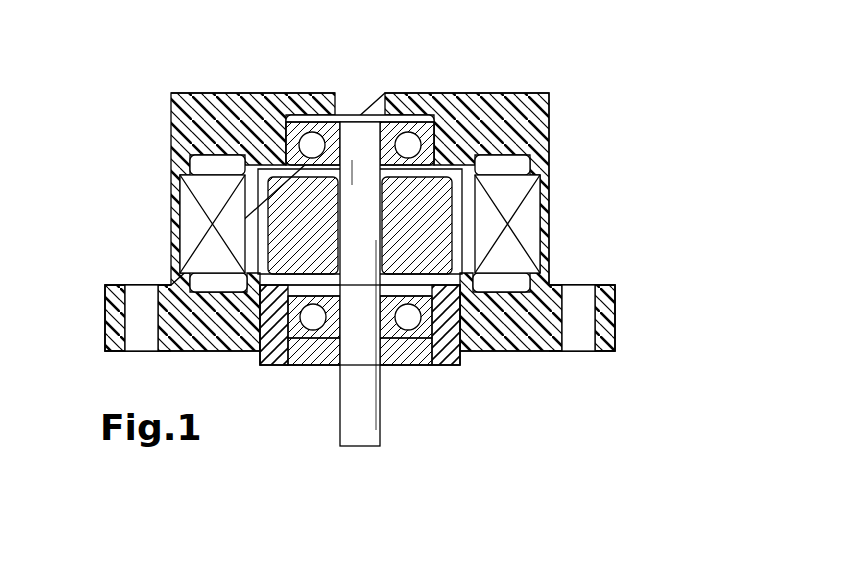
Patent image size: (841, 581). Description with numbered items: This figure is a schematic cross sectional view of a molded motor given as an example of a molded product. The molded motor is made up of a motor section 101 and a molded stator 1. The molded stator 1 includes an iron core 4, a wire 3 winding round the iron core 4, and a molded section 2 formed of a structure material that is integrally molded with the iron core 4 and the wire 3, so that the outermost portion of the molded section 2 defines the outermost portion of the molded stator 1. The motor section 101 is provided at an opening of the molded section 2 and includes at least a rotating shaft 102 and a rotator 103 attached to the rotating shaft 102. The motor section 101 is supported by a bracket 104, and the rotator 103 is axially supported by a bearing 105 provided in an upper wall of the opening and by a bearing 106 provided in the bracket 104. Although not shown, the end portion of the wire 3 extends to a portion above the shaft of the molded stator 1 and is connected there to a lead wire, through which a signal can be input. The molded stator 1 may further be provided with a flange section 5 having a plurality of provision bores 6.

The molded stator 1 is at (165, 115).
The molded section 2 is at (290, 103).
The wire 3 is at (238, 168).
The iron core 4 is at (190, 203).
The flange section 5 is at (113, 323).
The provision bores 6 is at (146, 302).
The motor section 101 is at (406, 380).
The rotating shaft 102 is at (367, 428).
The rotator 103 is at (433, 197).
The bracket 104 is at (262, 365).
The bearing 105 is at (313, 138).
The bearing 106 is at (314, 328).